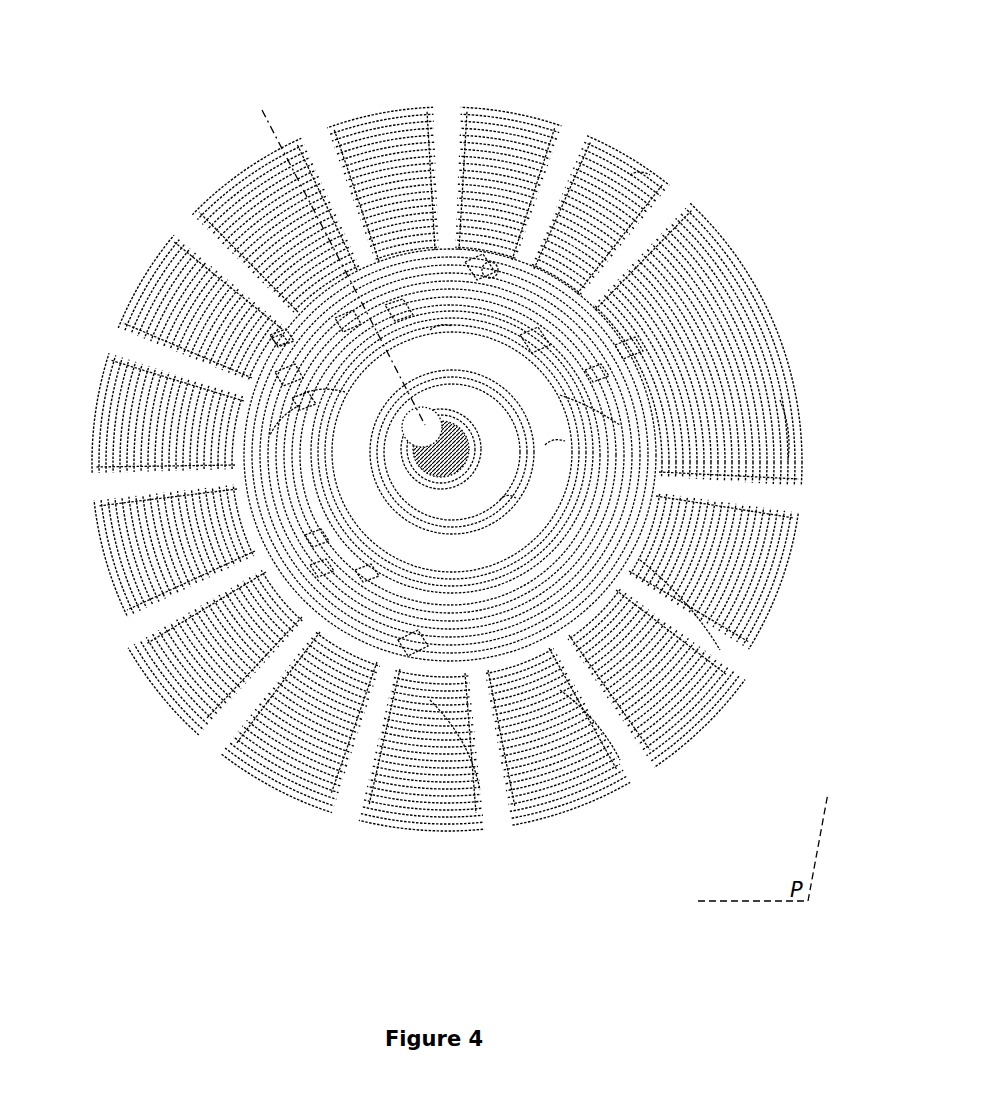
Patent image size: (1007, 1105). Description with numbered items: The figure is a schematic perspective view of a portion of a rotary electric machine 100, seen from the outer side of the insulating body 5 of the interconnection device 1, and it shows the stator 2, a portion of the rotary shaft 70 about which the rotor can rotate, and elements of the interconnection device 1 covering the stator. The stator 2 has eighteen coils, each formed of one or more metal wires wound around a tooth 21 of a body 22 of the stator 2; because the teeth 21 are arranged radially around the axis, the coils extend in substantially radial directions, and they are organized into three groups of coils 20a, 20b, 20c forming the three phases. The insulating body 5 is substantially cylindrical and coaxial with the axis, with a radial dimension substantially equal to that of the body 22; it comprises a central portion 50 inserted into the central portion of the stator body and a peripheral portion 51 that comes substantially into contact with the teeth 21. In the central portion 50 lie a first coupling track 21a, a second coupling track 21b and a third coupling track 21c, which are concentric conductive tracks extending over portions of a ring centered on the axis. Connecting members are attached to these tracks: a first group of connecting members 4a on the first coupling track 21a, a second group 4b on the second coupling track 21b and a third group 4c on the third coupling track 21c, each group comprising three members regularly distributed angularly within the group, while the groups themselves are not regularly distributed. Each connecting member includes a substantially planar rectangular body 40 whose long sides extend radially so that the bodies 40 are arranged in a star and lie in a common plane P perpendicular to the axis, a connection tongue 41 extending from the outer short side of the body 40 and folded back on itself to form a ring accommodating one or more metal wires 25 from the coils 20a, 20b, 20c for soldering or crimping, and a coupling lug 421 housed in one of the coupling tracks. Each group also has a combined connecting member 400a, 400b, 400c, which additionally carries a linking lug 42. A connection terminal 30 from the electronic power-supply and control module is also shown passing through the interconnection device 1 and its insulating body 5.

The rotary electric machine 100 is at (207, 110).
The interconnection device 1 is at (337, 490).
The stator 2 is at (208, 765).
The first group of connecting members 4a is at (533, 330).
The second group of connecting members 4b is at (397, 298).
The third group of connecting members 4c is at (365, 567).
The insulating body 5 is at (407, 638).
The first group of coils 20a is at (687, 608).
The second group of coils 20b is at (467, 737).
The third group of coils 20c is at (582, 702).
The tooth 21 is at (640, 177).
The first coupling track 21a is at (560, 443).
The second coupling track 21b is at (442, 328).
The third coupling track 21c is at (507, 505).
The body of the stator 22 is at (477, 257).
The metal wire 25 is at (597, 377).
The connection terminal 30 is at (278, 330).
The body 40 is at (567, 397).
The connection tongue 41 is at (627, 353).
The linking lug 42 is at (280, 333).
The central portion 50 is at (357, 512).
The peripheral portion 51 is at (790, 397).
The rotary shaft 70 is at (437, 410).
The combined connecting member of the first group 400a is at (300, 393).
The combined connecting member of the second group 400b is at (313, 530).
The combined connecting member of the third group 400c is at (343, 313).
The coupling lug 421 is at (325, 410).